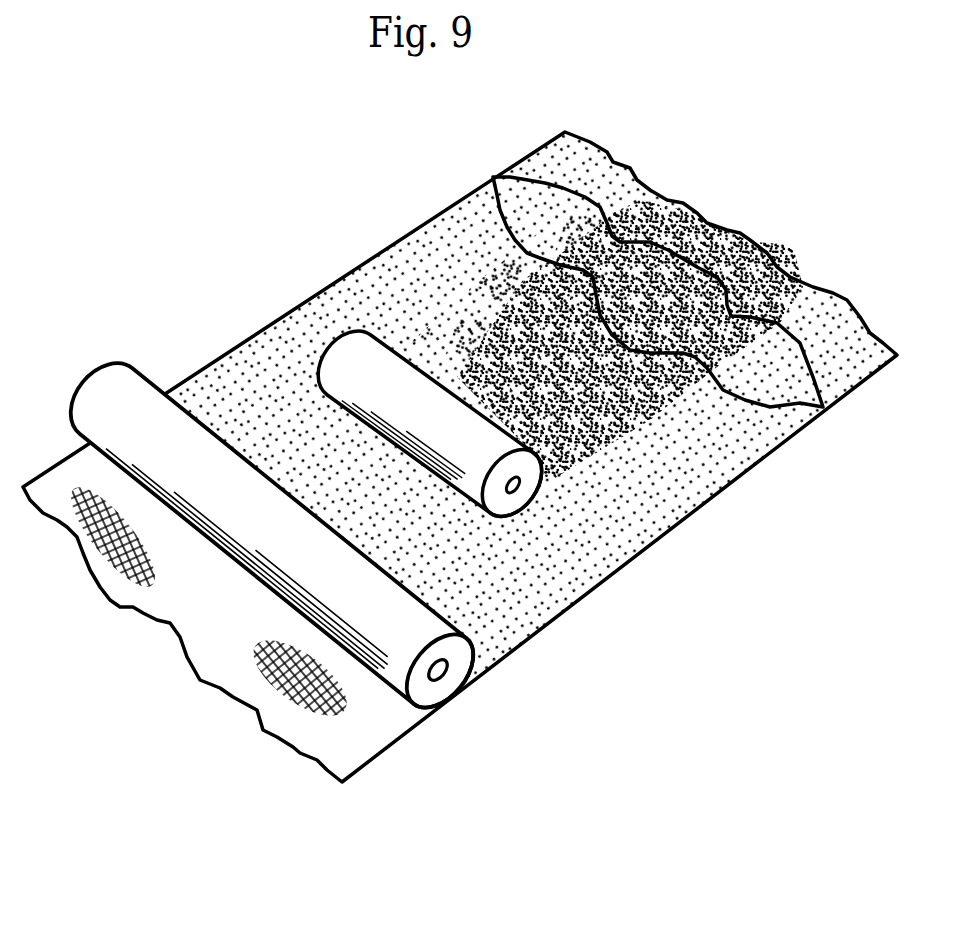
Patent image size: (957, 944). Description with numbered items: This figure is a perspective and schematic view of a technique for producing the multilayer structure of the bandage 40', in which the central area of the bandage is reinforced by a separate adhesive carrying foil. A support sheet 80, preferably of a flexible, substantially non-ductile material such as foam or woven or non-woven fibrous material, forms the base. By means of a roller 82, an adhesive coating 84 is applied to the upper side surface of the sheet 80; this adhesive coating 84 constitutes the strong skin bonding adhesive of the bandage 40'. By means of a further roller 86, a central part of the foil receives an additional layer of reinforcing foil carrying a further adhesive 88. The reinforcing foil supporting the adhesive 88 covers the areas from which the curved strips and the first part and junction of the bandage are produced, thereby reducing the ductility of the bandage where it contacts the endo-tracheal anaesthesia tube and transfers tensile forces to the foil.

The bandage 40' is at (658, 252).
The support sheet 80 is at (362, 735).
The roller 82 is at (458, 673).
The adhesive coating 84 is at (530, 595).
The further roller 86 is at (520, 498).
The adhesive of the reinforcing foil 88 is at (623, 412).